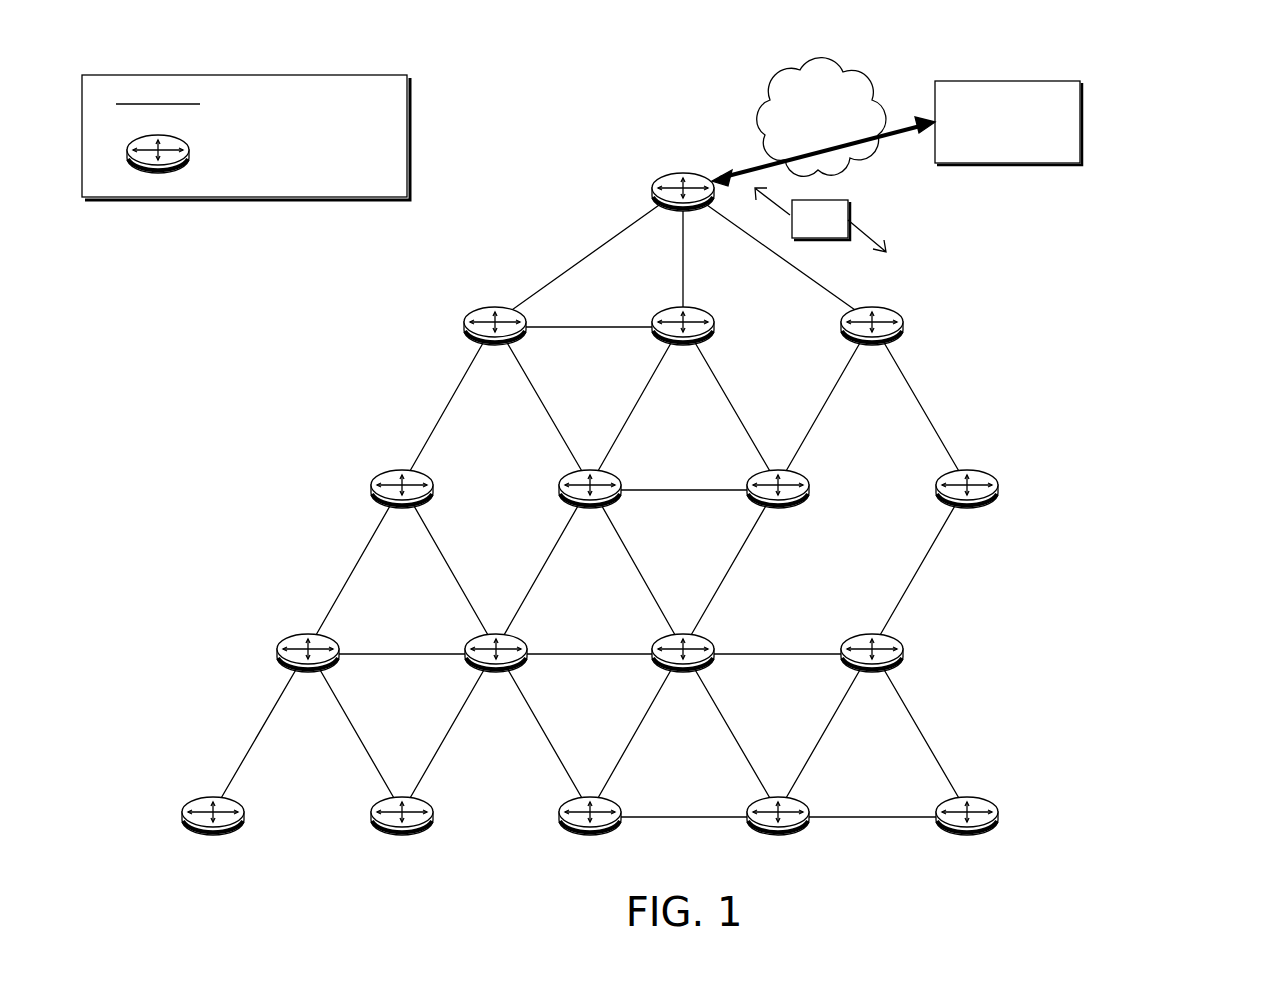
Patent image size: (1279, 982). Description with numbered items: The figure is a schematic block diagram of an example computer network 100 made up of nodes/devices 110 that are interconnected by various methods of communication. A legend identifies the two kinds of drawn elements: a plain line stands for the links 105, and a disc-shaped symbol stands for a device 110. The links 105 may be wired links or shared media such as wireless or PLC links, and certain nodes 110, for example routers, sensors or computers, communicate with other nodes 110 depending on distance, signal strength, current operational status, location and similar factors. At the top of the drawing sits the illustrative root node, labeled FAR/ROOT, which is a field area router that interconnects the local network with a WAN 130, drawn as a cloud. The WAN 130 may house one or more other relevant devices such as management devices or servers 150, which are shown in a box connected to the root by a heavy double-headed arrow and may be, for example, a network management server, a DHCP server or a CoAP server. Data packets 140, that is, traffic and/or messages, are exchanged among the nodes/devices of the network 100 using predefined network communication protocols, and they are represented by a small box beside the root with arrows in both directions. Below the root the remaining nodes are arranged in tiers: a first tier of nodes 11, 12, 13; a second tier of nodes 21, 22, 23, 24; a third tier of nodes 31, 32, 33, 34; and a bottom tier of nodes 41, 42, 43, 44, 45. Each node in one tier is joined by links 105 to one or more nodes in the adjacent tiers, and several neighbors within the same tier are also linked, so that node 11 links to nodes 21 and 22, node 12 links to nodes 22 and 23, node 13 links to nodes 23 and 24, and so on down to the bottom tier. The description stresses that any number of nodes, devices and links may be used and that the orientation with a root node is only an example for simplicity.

The computer network 100 is at (1177, 124).
The links 105 is at (541, 455).
The nodes/devices 110 is at (242, 154).
The WAN 130 is at (802, 137).
The data packets 140 is at (804, 232).
The servers 150 is at (990, 147).
The node 11 is at (495, 345).
The node 12 is at (683, 345).
The node 13 is at (872, 345).
The node 21 is at (402, 508).
The node 22 is at (590, 508).
The node 23 is at (778, 508).
The node 24 is at (967, 508).
The node 31 is at (308, 672).
The node 32 is at (496, 672).
The node 33 is at (683, 672).
The node 34 is at (872, 672).
The node 41 is at (213, 835).
The node 42 is at (402, 835).
The node 43 is at (590, 835).
The node 44 is at (778, 835).
The node 45 is at (967, 835).